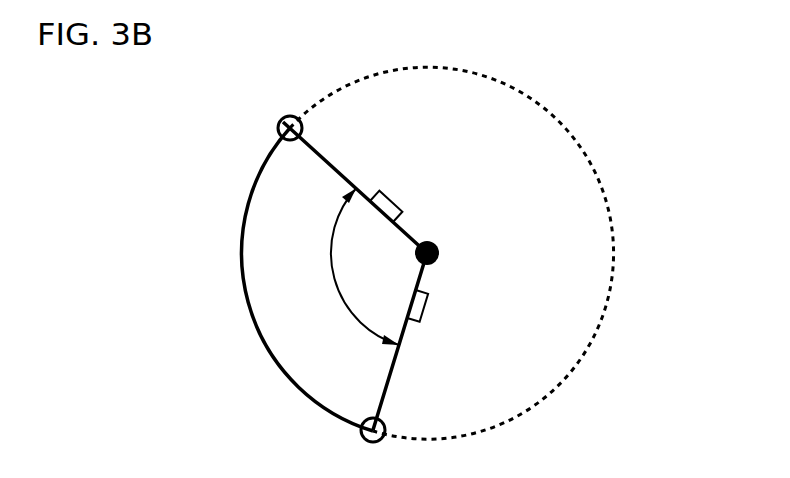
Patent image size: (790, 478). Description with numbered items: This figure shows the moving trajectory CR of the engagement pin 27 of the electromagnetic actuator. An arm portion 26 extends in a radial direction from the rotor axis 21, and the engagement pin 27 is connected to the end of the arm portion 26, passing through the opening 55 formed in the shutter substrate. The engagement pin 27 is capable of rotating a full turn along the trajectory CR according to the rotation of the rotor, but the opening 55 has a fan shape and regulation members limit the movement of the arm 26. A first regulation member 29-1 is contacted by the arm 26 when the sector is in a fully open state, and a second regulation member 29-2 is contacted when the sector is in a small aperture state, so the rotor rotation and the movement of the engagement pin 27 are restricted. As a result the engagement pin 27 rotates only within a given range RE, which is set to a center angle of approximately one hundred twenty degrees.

The rotor axis 21 is at (437, 247).
The arm portion 26 is at (328, 161).
The engagement pin 27 is at (279, 122).
The first regulation member 29-1 is at (429, 308).
The second regulation member 29-2 is at (403, 207).
The opening 55 is at (258, 258).
The moving trajectory CR is at (598, 173).
The range RE is at (336, 263).